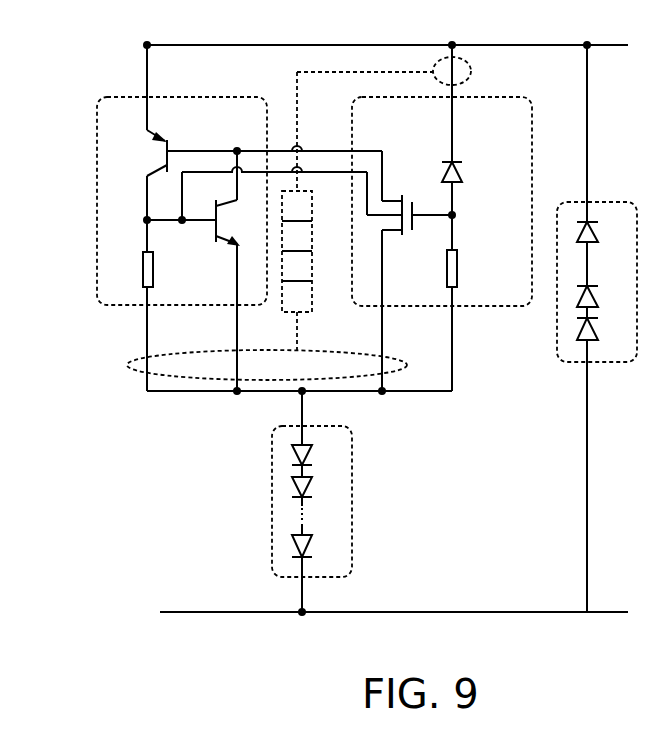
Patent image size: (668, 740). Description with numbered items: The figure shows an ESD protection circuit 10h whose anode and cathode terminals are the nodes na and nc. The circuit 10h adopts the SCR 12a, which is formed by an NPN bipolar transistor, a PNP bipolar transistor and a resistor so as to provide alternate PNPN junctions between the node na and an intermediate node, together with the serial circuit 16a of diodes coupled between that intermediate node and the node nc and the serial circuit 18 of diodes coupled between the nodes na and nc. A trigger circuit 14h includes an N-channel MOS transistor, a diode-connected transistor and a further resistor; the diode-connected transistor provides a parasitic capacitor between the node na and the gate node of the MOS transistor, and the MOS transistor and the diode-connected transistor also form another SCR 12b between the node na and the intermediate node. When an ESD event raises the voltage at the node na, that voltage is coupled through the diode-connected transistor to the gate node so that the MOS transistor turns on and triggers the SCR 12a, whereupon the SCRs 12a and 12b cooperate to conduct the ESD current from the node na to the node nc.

The ESD protection circuit 10h is at (64, 93).
The SCR 12a is at (97, 153).
The SCR 12b is at (306, 313).
The trigger circuit 14h is at (472, 307).
The serial circuit 16a is at (273, 492).
The serial circuit 18 is at (606, 362).